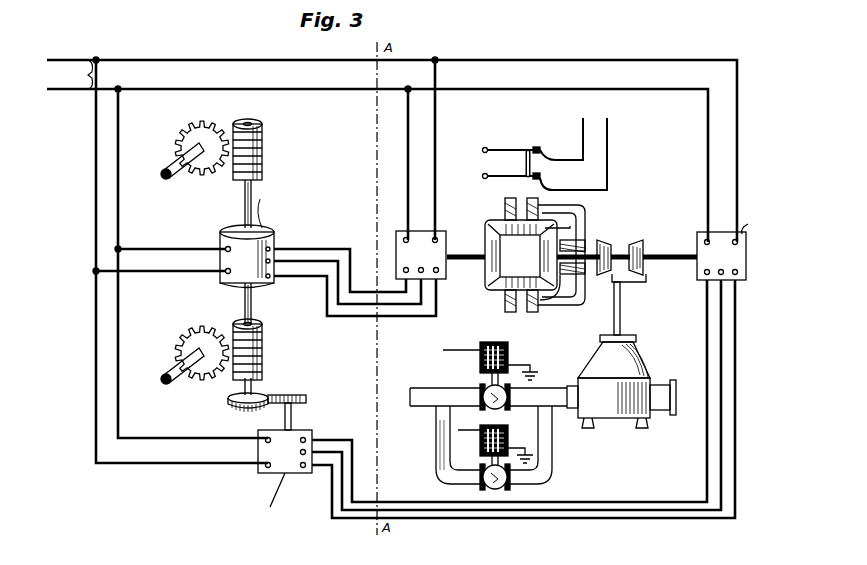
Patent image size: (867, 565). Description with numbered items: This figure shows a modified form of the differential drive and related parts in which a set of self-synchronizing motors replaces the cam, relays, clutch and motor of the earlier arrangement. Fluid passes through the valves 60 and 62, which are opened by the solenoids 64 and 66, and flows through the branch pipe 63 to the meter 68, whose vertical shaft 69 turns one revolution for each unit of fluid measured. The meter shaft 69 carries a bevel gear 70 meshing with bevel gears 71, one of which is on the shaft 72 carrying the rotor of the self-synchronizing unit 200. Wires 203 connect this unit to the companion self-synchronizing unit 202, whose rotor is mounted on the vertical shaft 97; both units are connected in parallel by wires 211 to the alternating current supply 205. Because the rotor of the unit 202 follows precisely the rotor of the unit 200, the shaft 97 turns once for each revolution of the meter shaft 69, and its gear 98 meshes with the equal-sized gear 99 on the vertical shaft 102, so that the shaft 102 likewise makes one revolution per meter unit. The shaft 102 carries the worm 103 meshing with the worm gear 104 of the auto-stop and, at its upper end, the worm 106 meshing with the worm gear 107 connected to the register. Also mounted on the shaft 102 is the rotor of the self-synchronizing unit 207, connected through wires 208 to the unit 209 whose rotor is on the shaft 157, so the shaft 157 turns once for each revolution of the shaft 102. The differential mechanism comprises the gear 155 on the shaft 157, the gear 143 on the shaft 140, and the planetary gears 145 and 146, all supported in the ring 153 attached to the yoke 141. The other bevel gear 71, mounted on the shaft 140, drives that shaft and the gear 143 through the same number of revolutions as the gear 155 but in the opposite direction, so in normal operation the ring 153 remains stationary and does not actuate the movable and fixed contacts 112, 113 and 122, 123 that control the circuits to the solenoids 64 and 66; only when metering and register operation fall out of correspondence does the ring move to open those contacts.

The alternating current supply 205 is at (42, 88).
The wires 211 is at (215, 88).
The worm gear 107 is at (182, 132).
The worm 106 is at (262, 126).
The vertical shaft 102 is at (244, 299).
The self-synchronizing unit 207 is at (262, 232).
The wires 208 is at (338, 255).
The worm gear 104 is at (184, 330).
The worm 103 is at (263, 343).
The gear 99 is at (228, 405).
The gear 98 is at (298, 395).
The vertical shaft 97 is at (292, 416).
The self-synchronizing unit 202 is at (290, 473).
The wires 203 is at (626, 518).
The self-synchronizing unit 209 is at (441, 232).
The shaft 157 is at (464, 254).
The gear 155 is at (488, 285).
The ring 153 is at (505, 200).
The planetary gear 146 is at (545, 300).
The movable contact 112 is at (508, 147).
The fixed contact 113 is at (546, 150).
The movable contact 122 is at (486, 172).
The fixed contact 123 is at (543, 183).
The shaft 140 is at (576, 242).
The gear 143 is at (560, 232).
The planetary gear 145 is at (565, 216).
The yoke 141 is at (582, 300).
The bevel gear 71 is at (612, 245).
The bevel gear 70 is at (630, 280).
The shaft 72 is at (668, 250).
The vertical shaft 69 is at (620, 316).
The self-synchronizing unit 200 is at (740, 252).
The meter 68 is at (640, 382).
The branch pipe 63 is at (552, 466).
The valve 62 is at (482, 388).
The solenoid 66 is at (500, 344).
The solenoid 64 is at (480, 447).
The valve 60 is at (510, 488).